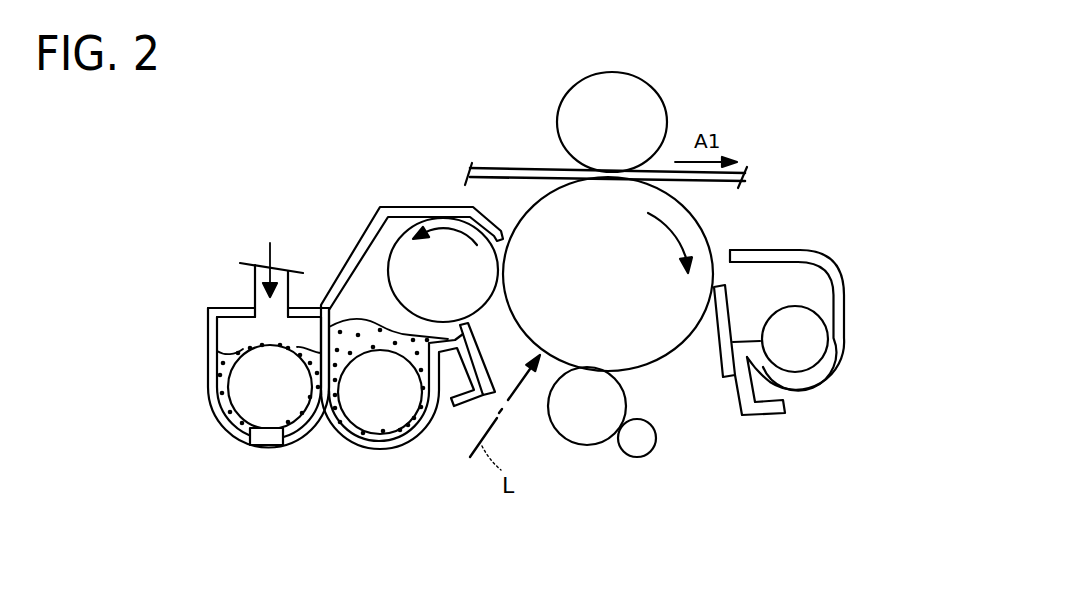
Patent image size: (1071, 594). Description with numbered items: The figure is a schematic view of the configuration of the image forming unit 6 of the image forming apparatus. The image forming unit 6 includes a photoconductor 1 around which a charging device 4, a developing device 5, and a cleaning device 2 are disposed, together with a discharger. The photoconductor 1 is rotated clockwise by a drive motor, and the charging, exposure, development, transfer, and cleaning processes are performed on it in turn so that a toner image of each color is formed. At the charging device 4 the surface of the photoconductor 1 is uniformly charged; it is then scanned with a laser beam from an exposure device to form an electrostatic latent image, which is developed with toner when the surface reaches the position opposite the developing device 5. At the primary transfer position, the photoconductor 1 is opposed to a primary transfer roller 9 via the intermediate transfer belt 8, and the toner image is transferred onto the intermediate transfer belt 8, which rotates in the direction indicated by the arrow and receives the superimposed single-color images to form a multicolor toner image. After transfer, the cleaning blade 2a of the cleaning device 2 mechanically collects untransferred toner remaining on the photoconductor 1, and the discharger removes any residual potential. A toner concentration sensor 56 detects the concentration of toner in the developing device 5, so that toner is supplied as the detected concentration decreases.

The photoconductor 1 is at (599, 289).
The cleaning device 2 is at (781, 436).
The cleaning blade 2a is at (723, 307).
The charging device 4 is at (578, 428).
The developing device 5 is at (185, 415).
The toner concentration sensor 56 is at (268, 446).
The image forming unit 6 is at (436, 512).
The intermediate transfer belt 8 is at (505, 167).
The primary transfer roller 9 is at (637, 107).